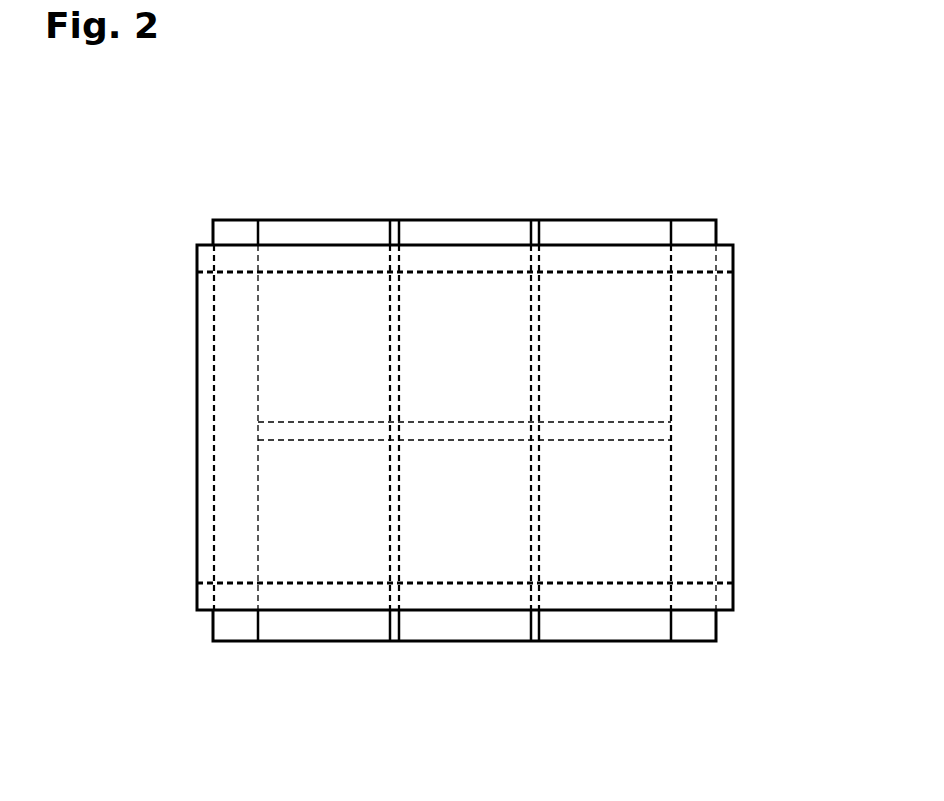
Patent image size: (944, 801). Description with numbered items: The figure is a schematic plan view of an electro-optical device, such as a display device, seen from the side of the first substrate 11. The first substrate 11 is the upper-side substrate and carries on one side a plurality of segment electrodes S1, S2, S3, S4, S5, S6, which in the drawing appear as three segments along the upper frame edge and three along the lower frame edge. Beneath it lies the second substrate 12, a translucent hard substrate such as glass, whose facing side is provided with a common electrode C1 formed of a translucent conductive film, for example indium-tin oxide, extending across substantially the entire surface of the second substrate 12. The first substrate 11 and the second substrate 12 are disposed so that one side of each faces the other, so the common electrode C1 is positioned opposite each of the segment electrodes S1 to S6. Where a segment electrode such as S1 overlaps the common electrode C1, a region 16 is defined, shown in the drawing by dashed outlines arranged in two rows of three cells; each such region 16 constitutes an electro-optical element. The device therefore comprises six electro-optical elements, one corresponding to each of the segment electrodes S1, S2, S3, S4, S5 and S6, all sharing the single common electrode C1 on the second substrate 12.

The first substrate 11 is at (696, 228).
The second substrate 12 is at (727, 596).
The region 16 is at (290, 345).
The common electrode C1 is at (725, 412).
The segment electrode S1 is at (308, 230).
The segment electrode S2 is at (447, 230).
The segment electrode S3 is at (585, 230).
The segment electrode S4 is at (303, 628).
The segment electrode S5 is at (453, 628).
The segment electrode S6 is at (587, 628).